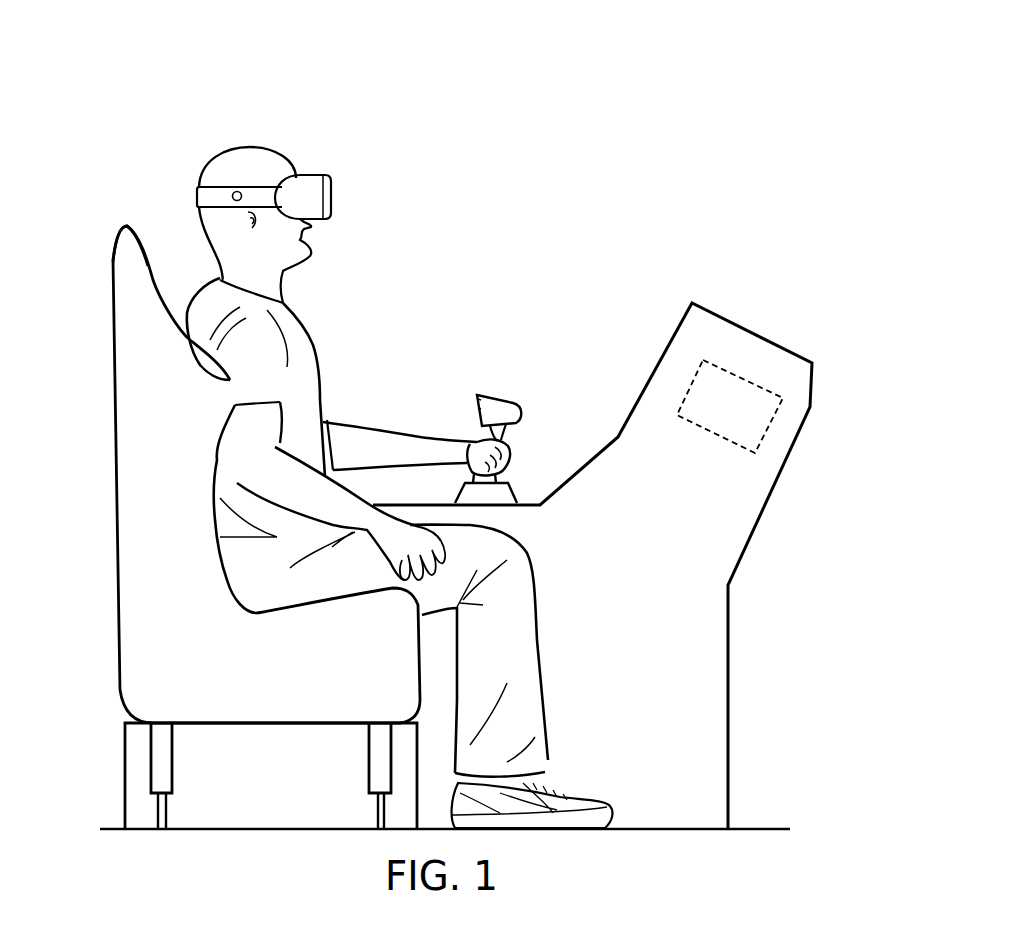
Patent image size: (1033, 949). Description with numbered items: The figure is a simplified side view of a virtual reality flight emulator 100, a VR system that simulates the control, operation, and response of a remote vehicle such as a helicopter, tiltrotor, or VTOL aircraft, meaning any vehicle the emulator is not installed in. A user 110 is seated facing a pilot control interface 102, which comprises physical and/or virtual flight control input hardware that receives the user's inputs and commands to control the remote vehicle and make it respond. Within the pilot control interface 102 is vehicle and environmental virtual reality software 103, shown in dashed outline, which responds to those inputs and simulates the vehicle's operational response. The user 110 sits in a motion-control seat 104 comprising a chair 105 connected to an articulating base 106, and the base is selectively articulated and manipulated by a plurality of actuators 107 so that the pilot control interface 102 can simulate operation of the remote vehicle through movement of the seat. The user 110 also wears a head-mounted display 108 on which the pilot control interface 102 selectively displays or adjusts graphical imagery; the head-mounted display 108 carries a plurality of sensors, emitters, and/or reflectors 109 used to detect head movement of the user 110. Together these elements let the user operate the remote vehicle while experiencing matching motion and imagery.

The virtual reality flight emulator 100 is at (763, 96).
The pilot control interface 102 is at (771, 495).
The vehicle and environmental virtual reality software 103 is at (745, 378).
The motion-control seat 104 is at (123, 226).
The chair 105 is at (115, 427).
The articulating base 106 is at (123, 778).
The actuators 107 is at (173, 762).
The head-mounted display 108 is at (332, 195).
The sensors, emitters, and/or reflectors 109 is at (237, 191).
The user 110 is at (312, 352).